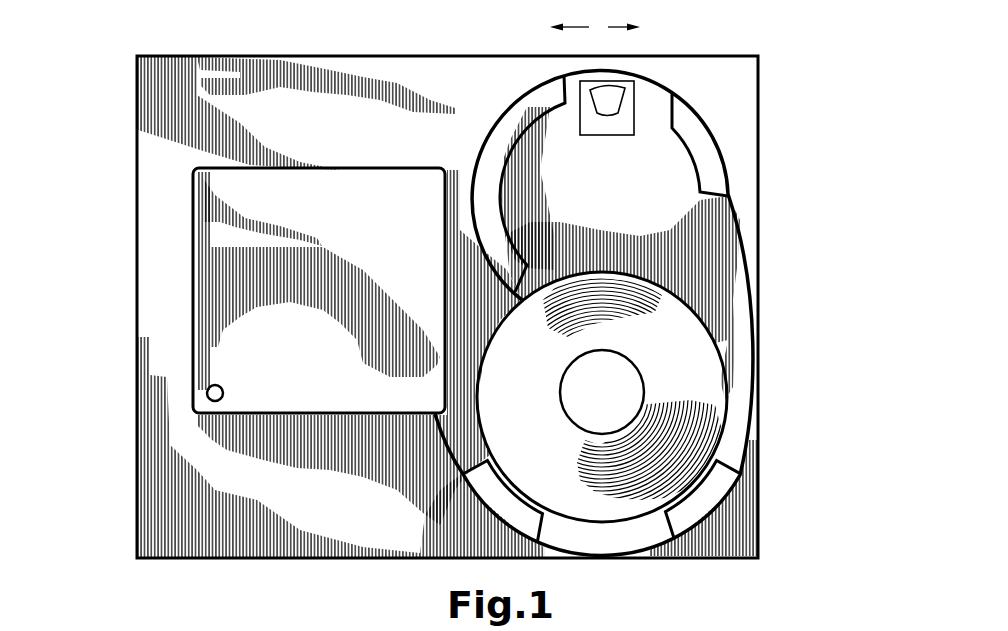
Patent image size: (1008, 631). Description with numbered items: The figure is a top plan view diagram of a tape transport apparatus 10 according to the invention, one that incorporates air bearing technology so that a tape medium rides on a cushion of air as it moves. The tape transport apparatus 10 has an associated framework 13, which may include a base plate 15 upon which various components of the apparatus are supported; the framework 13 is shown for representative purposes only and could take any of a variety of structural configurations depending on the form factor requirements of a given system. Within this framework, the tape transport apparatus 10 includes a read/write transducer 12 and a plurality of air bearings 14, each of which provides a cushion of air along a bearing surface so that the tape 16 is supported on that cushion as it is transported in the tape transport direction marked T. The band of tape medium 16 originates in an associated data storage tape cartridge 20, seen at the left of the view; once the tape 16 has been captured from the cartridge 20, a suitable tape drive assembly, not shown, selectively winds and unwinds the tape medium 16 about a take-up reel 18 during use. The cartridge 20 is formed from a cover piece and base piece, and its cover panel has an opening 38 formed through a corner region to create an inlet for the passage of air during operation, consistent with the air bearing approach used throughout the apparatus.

The tape transport apparatus 10 is at (466, 314).
The read/write transducer 12 is at (605, 100).
The framework 13 is at (137, 216).
The air bearings 14 is at (520, 118).
The base plate 15 is at (319, 144).
The tape 16 is at (740, 223).
The take-up reel 18 is at (690, 363).
The data storage tape cartridge 20 is at (228, 285).
The opening 38 is at (207, 393).